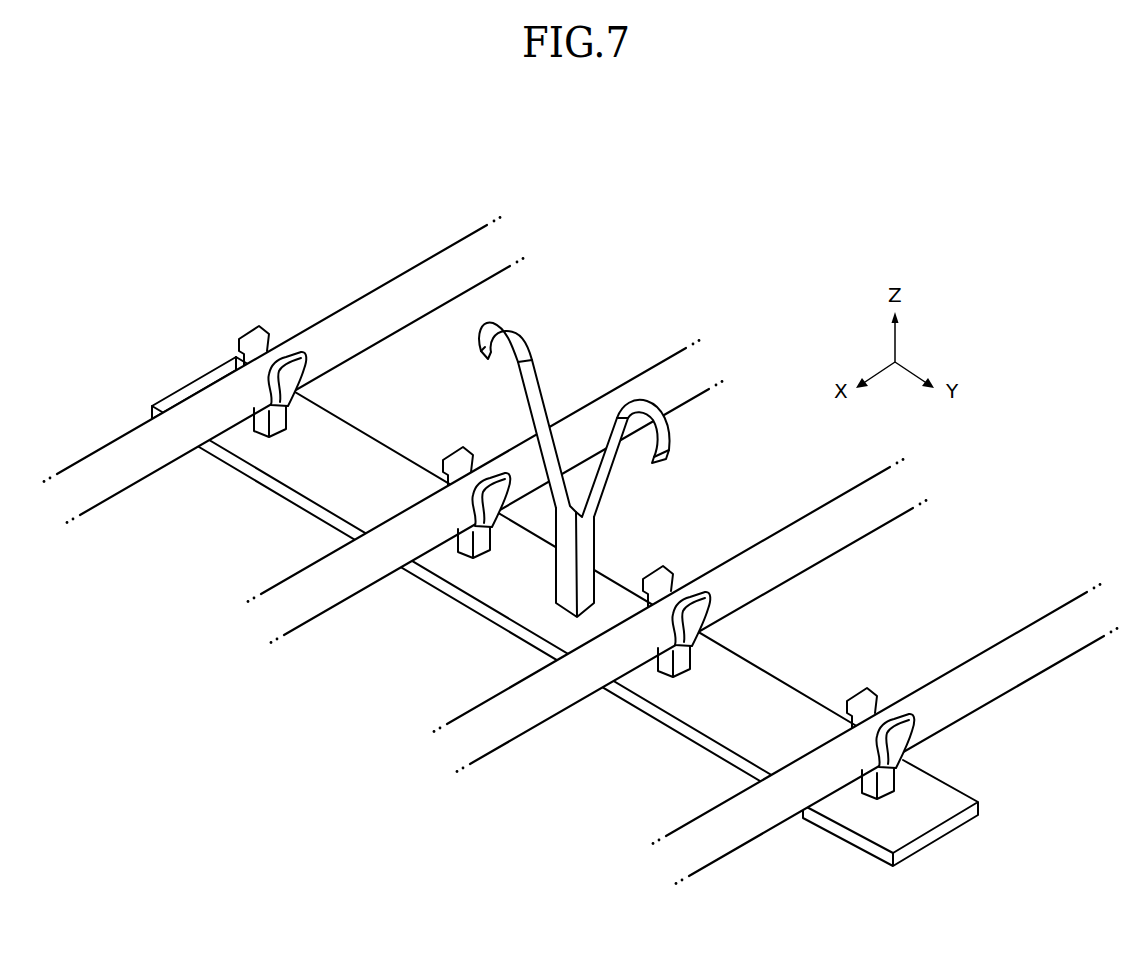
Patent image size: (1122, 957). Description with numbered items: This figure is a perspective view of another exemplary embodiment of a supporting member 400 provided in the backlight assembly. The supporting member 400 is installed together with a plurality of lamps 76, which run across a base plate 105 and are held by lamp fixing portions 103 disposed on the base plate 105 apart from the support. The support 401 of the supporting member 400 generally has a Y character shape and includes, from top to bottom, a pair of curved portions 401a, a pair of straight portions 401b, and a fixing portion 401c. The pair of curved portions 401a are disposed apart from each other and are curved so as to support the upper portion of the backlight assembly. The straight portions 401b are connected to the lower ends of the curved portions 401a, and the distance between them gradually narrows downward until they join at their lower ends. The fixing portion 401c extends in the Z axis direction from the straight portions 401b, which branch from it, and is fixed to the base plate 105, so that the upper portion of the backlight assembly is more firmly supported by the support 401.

The lamp 76 is at (1046, 668).
The lamp fixing portion 103 is at (867, 782).
The base plate 105 is at (937, 797).
The supporting member 400 is at (593, 469).
The support 401 is at (593, 469).
The curved portion 401a is at (517, 331).
The straight portion 401b is at (527, 396).
The fixing portion 401c is at (567, 570).